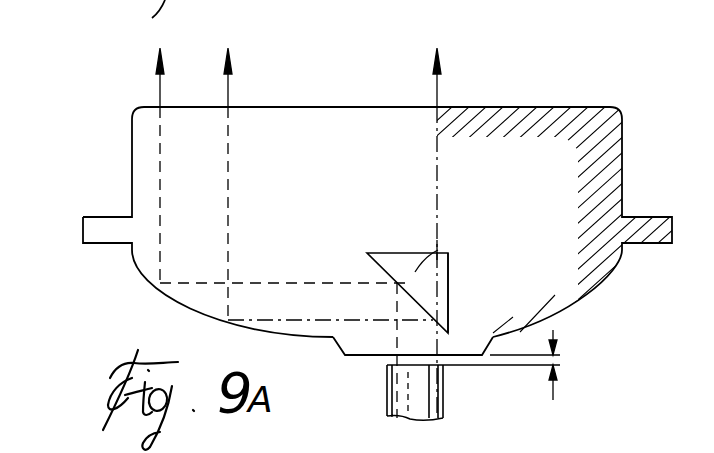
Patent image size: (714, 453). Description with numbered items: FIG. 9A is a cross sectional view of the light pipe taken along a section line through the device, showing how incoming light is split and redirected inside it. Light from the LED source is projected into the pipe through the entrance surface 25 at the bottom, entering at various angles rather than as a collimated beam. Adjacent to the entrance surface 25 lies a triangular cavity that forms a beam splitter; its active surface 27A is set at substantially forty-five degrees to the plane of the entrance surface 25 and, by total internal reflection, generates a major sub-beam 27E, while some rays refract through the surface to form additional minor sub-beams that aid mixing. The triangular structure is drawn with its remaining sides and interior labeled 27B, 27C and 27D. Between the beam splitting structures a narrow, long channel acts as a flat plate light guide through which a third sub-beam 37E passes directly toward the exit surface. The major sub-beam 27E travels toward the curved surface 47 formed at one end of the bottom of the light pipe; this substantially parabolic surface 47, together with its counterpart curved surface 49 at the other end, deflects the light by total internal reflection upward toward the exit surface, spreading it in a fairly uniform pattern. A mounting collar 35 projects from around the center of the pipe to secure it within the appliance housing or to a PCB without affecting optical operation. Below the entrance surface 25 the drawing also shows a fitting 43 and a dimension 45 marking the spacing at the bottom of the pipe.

The entrance surface 25 is at (368, 357).
The active surface of triangular cavity 27A is at (397, 300).
The deflector 27B is at (407, 253).
The deflector edge 27C is at (450, 277).
The flow path 27D is at (440, 247).
The major sub-beam 27E is at (157, 85).
The mounting collar 35 is at (102, 215).
The third sub-beam 37E is at (437, 83).
The nozzle 43 is at (443, 395).
The gap dimension 45 is at (556, 390).
The curved surface 47 is at (180, 303).
The curved surface 49 is at (576, 300).